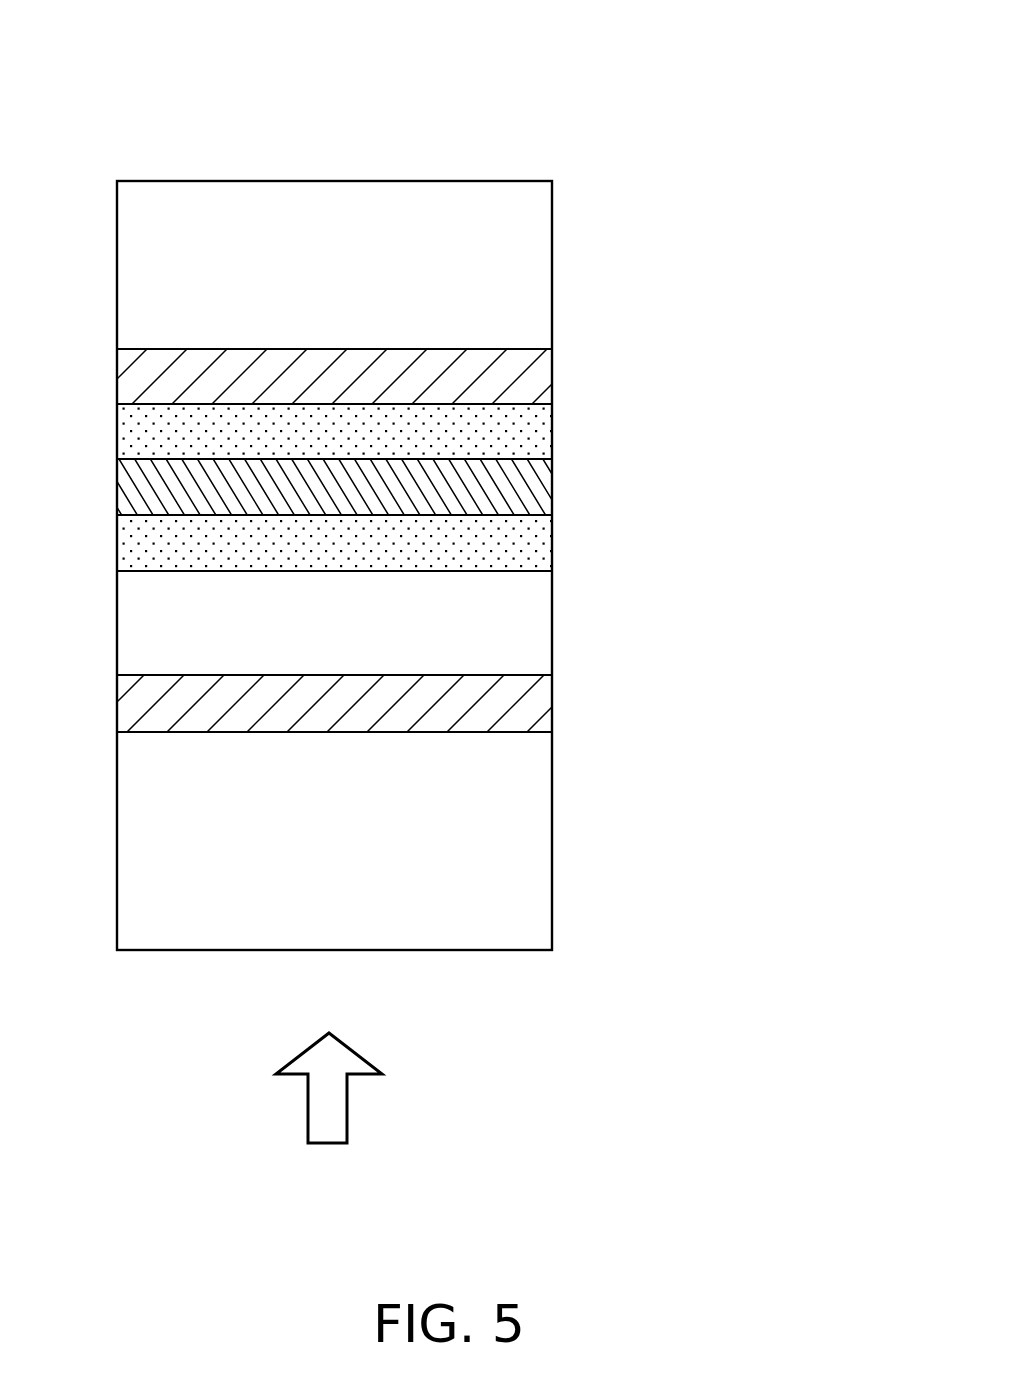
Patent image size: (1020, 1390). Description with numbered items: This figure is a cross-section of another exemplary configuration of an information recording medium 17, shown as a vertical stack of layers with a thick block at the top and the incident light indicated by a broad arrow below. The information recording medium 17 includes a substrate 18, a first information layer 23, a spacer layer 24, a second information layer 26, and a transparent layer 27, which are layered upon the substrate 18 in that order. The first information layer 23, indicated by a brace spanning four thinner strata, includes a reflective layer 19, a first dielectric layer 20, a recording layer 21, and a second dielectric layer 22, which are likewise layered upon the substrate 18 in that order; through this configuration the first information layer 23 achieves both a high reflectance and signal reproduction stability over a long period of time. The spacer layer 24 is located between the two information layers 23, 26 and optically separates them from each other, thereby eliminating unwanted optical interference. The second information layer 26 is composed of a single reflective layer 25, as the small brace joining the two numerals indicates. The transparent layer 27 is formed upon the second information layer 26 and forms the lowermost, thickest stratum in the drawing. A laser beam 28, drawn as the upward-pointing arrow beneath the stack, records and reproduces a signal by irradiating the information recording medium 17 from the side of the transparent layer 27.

The information recording medium 17 is at (348, 110).
The substrate 18 is at (507, 270).
The reflective layer 19 is at (528, 372).
The first dielectric layer 20 is at (533, 430).
The recording layer 21 is at (532, 487).
The second dielectric layer 22 is at (533, 542).
The first information layer 23 is at (692, 328).
The spacer layer 24 is at (525, 618).
The reflective layer 25 is at (525, 710).
The second information layer 26 is at (672, 663).
The transparent layer 27 is at (523, 790).
The laser beam 28 is at (347, 1108).